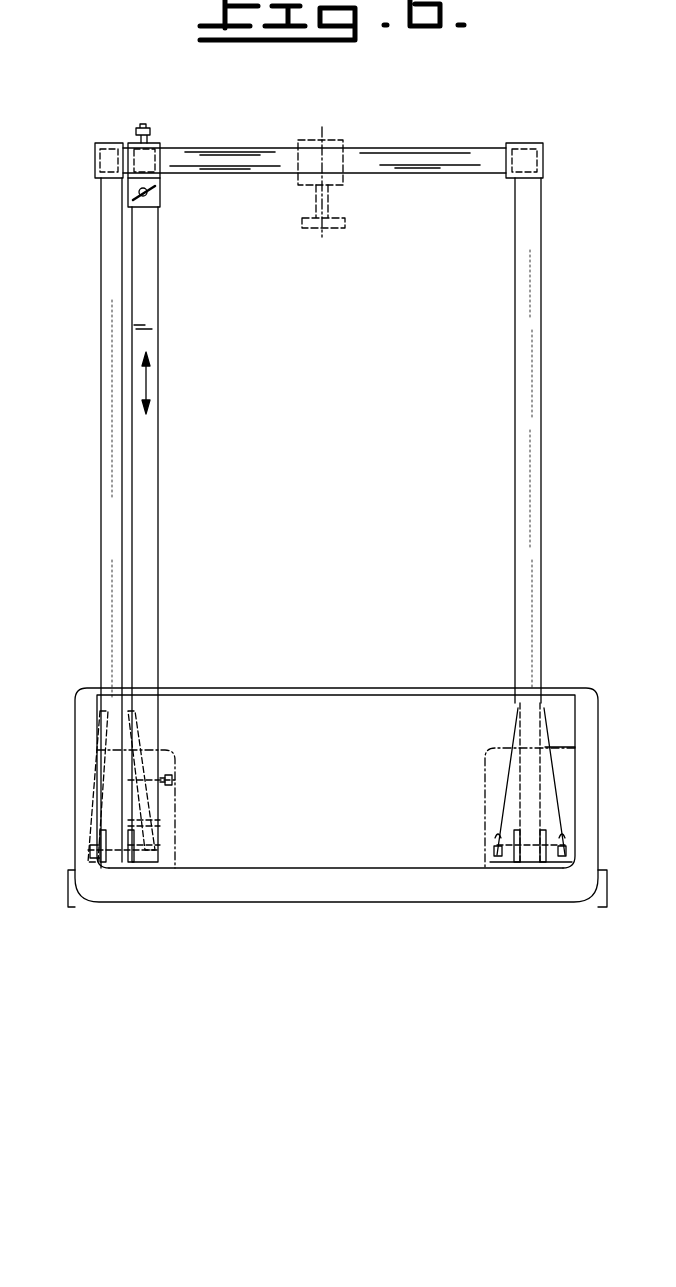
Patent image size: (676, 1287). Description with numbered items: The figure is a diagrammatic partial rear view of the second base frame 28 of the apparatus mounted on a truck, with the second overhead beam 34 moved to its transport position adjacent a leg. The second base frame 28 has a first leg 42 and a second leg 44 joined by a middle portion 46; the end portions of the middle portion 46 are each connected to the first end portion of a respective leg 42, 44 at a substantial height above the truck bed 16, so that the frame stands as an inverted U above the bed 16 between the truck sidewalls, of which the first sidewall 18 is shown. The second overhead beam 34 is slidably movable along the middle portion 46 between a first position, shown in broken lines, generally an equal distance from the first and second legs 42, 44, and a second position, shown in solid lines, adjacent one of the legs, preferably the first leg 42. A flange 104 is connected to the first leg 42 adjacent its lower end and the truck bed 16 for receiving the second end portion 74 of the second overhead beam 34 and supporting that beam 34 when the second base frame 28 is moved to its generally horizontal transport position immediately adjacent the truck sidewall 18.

The bed 16 is at (342, 896).
The first sidewall 18 is at (75, 753).
The second base frame 28 is at (506, 127).
The second overhead beam 34 is at (343, 151).
The first leg 42 is at (102, 325).
The second leg 44 is at (538, 307).
The middle portion 46 is at (212, 148).
The second end portion 74 is at (176, 738).
The flange 104 is at (172, 780).